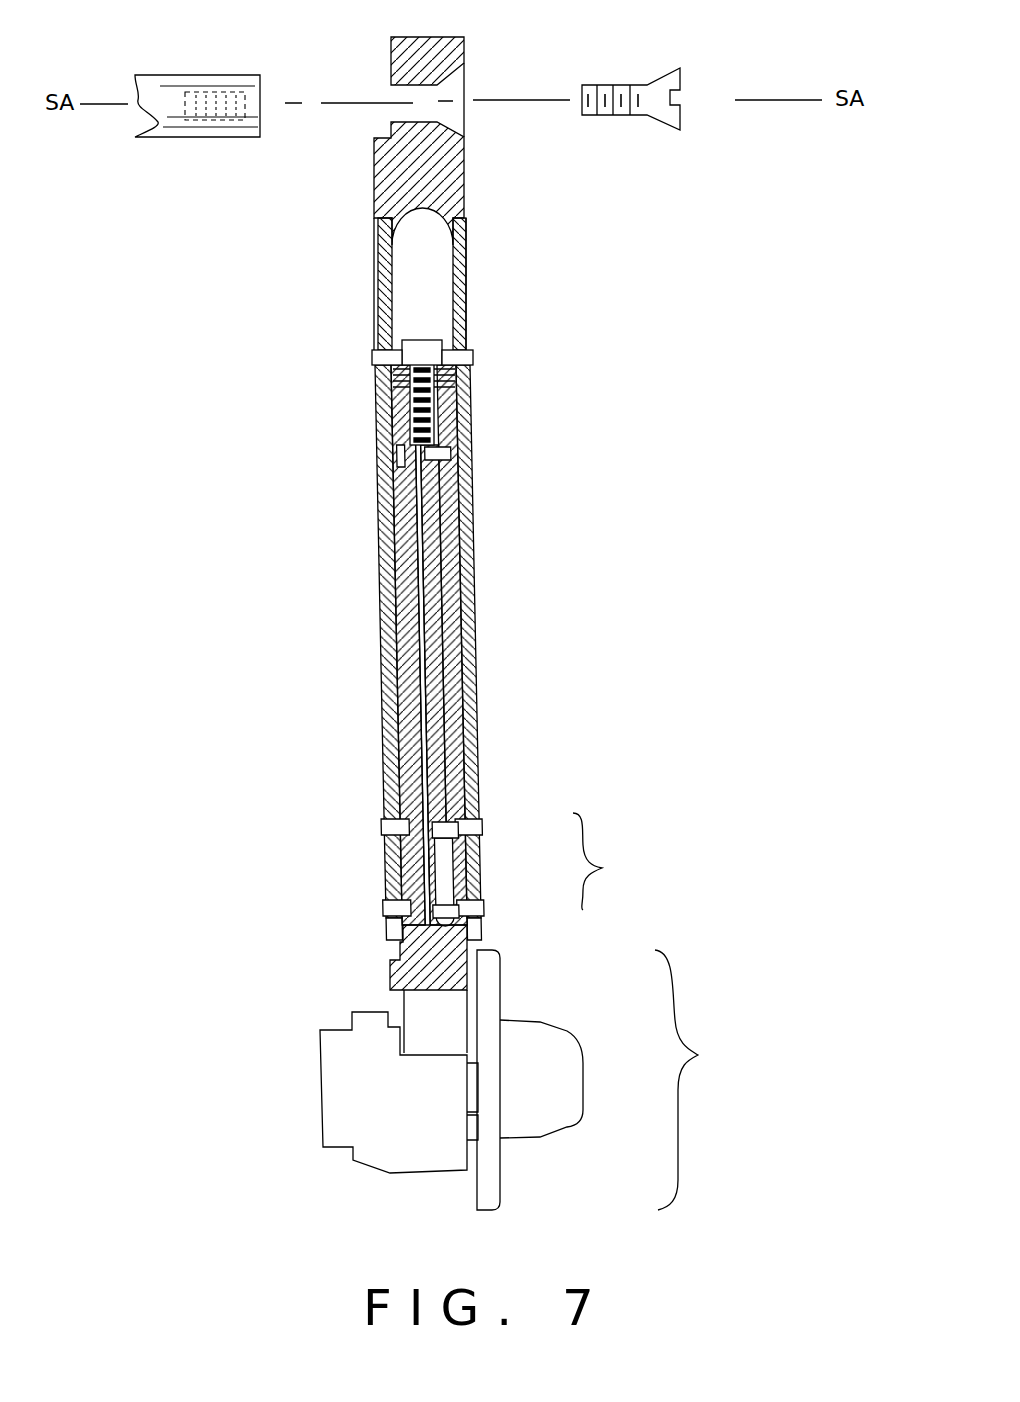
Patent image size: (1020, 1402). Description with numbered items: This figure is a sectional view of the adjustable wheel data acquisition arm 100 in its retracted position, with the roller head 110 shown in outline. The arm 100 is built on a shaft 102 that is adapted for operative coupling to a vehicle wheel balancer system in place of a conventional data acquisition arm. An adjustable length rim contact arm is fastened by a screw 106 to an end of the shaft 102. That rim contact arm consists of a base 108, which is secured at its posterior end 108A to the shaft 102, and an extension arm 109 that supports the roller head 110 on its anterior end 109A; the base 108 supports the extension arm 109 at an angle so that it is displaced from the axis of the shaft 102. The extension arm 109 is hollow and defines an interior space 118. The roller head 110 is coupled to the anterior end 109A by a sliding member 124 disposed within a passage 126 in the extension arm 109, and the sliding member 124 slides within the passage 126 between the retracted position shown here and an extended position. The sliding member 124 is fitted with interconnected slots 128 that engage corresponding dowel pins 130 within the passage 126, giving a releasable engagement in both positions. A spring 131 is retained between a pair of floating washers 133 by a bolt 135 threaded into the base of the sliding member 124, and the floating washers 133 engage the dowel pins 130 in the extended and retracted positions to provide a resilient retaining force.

The wheel data acquisition arm 100 is at (592, 664).
The shaft 102 is at (205, 75).
The screw 106 is at (662, 70).
The base 108 is at (437, 185).
The posterior end 108A is at (440, 62).
The extension arm 109 is at (477, 578).
The anterior end 109A is at (621, 861).
The roller head 110 is at (536, 1080).
The interior space 118 is at (430, 290).
The sliding member 124 is at (452, 694).
The passage 126 is at (410, 650).
The interconnected slots 128 is at (455, 465).
The dowel pins 130 is at (382, 356).
The spring 131 is at (455, 378).
The floating washers 133 is at (460, 388).
The bolt 135 is at (428, 340).